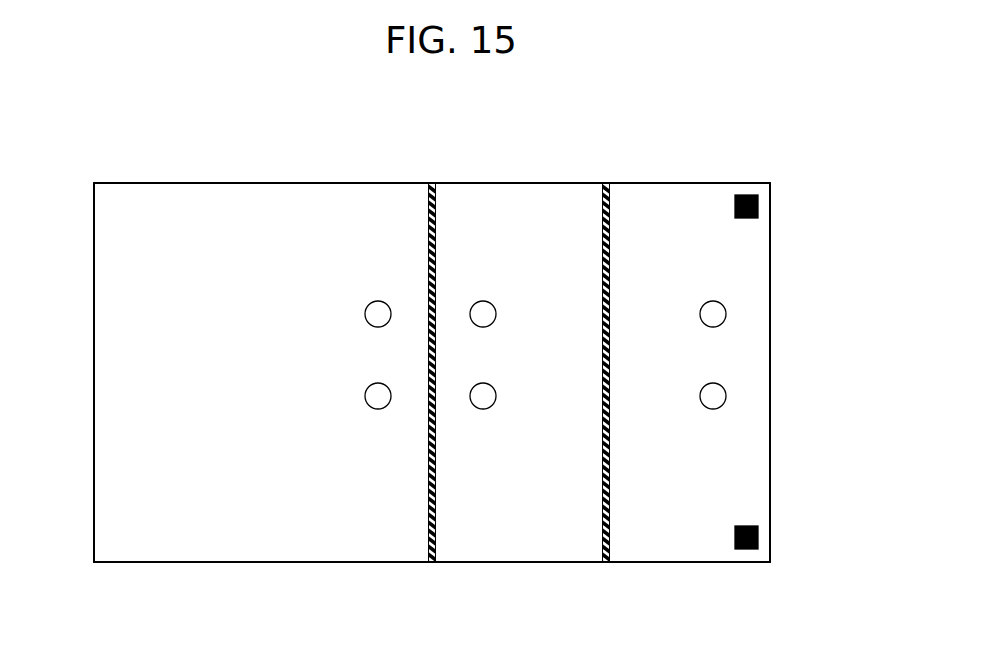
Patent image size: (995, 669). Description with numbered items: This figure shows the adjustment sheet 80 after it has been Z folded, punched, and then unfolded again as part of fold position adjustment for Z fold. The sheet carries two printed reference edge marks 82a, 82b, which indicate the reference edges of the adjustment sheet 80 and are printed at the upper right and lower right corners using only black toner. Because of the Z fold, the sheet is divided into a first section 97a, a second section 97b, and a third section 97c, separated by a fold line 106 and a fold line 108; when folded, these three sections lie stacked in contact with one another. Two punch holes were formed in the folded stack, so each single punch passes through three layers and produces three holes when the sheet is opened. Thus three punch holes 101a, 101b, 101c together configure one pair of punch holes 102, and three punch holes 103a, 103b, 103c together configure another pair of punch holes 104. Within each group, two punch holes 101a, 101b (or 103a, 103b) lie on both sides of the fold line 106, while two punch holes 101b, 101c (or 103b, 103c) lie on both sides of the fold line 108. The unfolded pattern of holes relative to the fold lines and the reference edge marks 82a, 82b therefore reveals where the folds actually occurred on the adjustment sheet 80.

The adjustment sheet 80 is at (264, 173).
The reference edge mark 82a is at (758, 206).
The reference edge mark 82b is at (758, 537).
The first section 97a is at (277, 566).
The second section 97b is at (577, 566).
The third section 97c is at (702, 566).
The punch hole 101a is at (365, 314).
The punch hole 101b is at (486, 301).
The punch hole 101c is at (726, 316).
The pair of punch holes 102 is at (566, 319).
The punch hole 103a is at (365, 396).
The punch hole 103b is at (484, 409).
The punch hole 103c is at (726, 398).
The pair of punch holes 104 is at (568, 398).
The fold line 106 is at (431, 249).
The fold line 108 is at (608, 249).